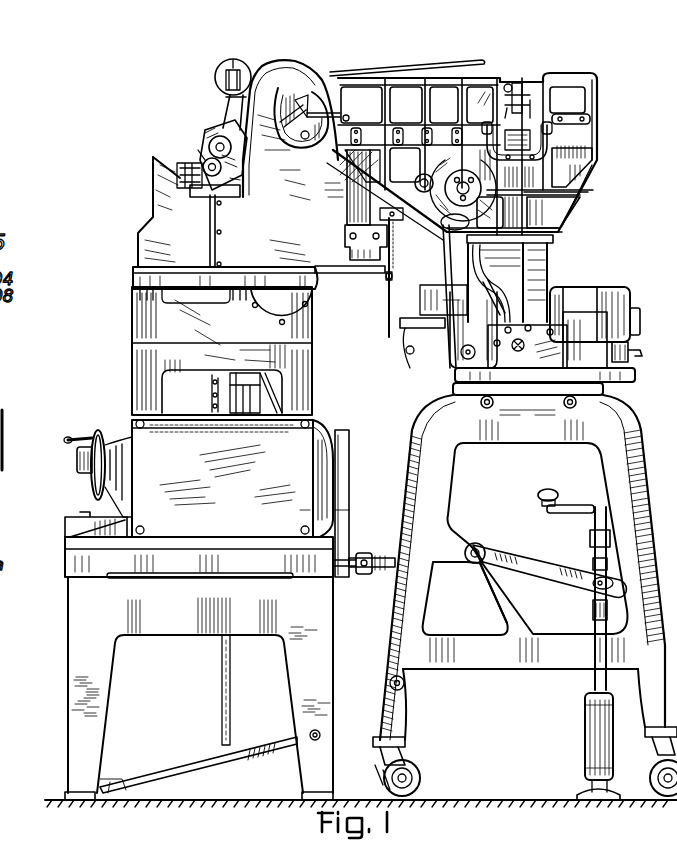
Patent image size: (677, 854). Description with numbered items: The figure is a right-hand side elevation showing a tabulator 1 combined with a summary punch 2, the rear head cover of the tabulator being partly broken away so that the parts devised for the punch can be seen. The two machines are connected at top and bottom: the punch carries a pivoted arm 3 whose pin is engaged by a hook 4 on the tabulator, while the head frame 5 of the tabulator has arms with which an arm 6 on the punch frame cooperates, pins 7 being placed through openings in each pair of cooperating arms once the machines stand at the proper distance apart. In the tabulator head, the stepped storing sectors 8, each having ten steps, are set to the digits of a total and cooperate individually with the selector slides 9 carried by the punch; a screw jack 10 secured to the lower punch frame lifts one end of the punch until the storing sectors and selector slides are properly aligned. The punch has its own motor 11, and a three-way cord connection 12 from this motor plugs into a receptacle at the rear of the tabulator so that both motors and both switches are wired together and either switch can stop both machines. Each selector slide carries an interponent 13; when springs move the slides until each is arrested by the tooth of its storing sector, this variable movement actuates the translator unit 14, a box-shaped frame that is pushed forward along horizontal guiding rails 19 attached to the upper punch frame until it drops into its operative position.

The tabulator 1 is at (110, 398).
The summary punch 2 is at (666, 347).
The pivoted arm 3 is at (388, 553).
The hook 4 is at (360, 574).
The head frame 5 is at (265, 224).
The arm 6 is at (370, 255).
The pins 7 is at (385, 295).
The stepped storing sectors 8 is at (330, 118).
The selector slides 9 is at (318, 148).
The screw jack 10 is at (592, 598).
The motor 11 is at (619, 300).
The three-way cord connection 12 is at (632, 352).
The interponent 13 is at (570, 127).
The translator unit 14 is at (533, 208).
The guiding rails 19 is at (563, 157).